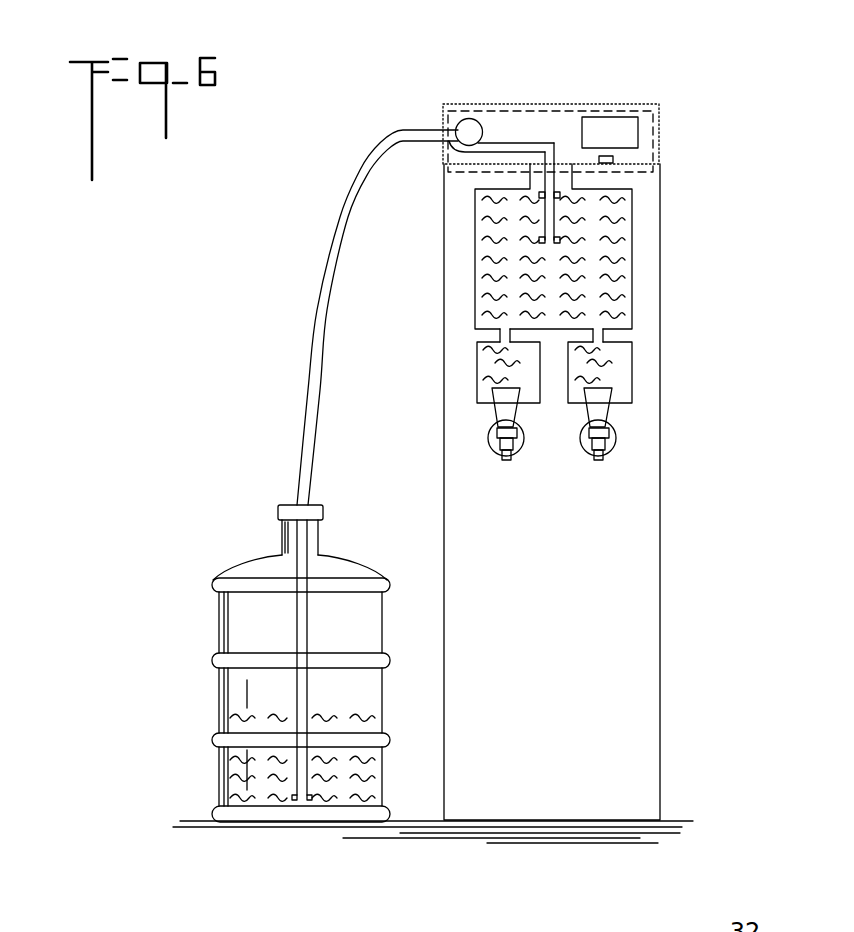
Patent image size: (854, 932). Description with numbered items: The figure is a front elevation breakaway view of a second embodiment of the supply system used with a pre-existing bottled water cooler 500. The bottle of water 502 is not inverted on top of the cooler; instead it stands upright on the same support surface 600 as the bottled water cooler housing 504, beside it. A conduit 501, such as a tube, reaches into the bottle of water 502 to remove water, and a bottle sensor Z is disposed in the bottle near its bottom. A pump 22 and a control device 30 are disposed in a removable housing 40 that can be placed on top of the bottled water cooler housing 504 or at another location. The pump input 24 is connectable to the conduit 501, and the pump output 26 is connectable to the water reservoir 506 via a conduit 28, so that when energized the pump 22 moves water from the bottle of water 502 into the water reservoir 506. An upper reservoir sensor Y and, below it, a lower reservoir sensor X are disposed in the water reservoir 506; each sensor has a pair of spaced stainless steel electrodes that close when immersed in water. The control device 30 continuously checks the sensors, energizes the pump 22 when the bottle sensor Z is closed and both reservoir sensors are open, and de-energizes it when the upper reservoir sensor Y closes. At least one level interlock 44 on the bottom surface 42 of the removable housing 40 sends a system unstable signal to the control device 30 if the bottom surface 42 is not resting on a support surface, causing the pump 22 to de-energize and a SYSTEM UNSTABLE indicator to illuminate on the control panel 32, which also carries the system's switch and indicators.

The pump 22 is at (463, 128).
The input 24 is at (442, 157).
The output 26 is at (483, 150).
The conduit 28 is at (537, 147).
The control device 30 is at (615, 128).
The control panel 32 is at (660, 152).
The removable housing 40 is at (660, 132).
The bottom surface 42 is at (635, 166).
The level interlock 44 is at (610, 160).
The lower reservoir sensor X is at (540, 240).
The upper reservoir sensor Y is at (540, 195).
The bottle sensor Z is at (293, 798).
The bottled water cooler 500 is at (700, 292).
The conduit 501 is at (315, 347).
The bottle of water 502 is at (230, 573).
The bottled water cooler housing 504 is at (660, 525).
The water reservoir 506 is at (568, 267).
The support surface 600 is at (567, 838).